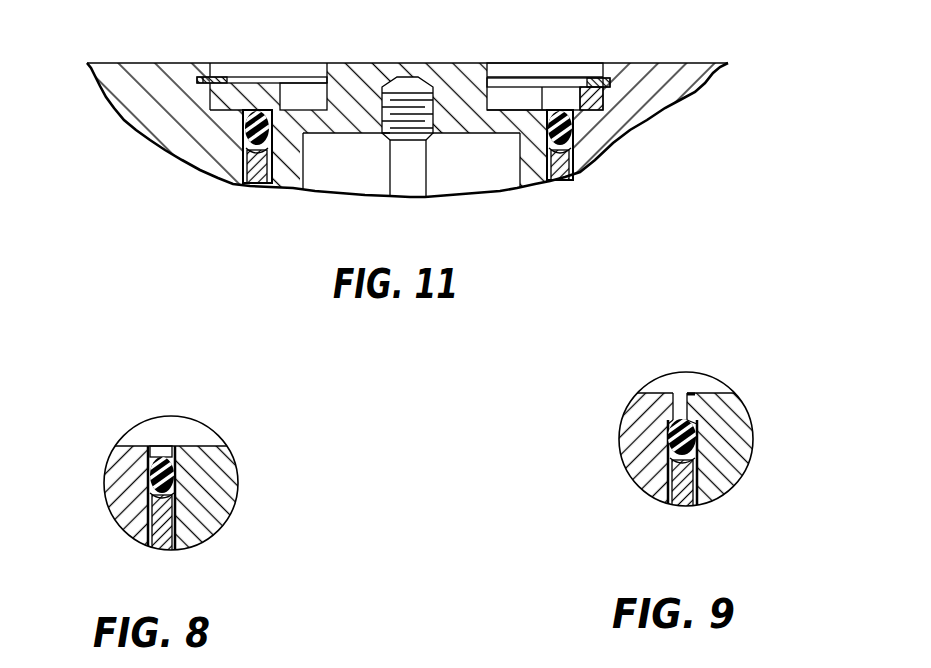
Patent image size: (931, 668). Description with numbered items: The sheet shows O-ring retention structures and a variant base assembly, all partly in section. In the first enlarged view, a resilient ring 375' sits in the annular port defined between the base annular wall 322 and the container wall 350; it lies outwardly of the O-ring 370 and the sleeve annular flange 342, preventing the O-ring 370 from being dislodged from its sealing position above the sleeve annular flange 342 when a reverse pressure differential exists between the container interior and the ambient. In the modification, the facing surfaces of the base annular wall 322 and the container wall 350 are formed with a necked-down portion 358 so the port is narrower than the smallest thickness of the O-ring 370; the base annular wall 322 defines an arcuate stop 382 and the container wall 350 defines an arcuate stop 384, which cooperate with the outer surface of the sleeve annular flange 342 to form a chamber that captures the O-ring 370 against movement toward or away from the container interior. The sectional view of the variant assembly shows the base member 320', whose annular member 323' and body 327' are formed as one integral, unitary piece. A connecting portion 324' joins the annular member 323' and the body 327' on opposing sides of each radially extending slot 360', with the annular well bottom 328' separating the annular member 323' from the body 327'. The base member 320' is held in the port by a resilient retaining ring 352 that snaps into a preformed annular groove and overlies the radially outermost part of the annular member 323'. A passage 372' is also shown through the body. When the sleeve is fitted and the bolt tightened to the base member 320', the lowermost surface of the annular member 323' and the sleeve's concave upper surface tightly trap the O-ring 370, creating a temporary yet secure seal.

In FIG. 11, the base member 320' is at (407, 103).
In FIG. 9, the base annular wall 322 is at (655, 487).
In FIG. 11, the annular member 323' is at (183, 110).
In FIG. 11, the connecting portion 324' is at (302, 71).
In FIG. 11, the body 327' is at (409, 101).
In FIG. 11, the annular well bottom 328' is at (548, 72).
In FIG. 11, the sleeve annular flange 342 is at (253, 188).
In FIG. 9, the sleeve annular flange 342 is at (683, 510).
In FIG. 9, the container wall 350 is at (718, 482).
In FIG. 11, the resilient retaining ring 352 is at (224, 78).
In FIG. 9, the necked-down portion 358 is at (672, 409).
In FIG. 11, the radially extending slot 360' is at (262, 44).
In FIG. 11, the O-ring 370 is at (572, 143).
In FIG. 8, the O-ring 370 is at (149, 462).
In FIG. 9, the O-ring 370 is at (699, 440).
In FIG. 11, the passage 372' is at (441, 186).
In FIG. 8, the resilient ring 375' is at (186, 424).
In FIG. 9, the arcuate stop 382 is at (678, 417).
In FIG. 9, the arcuate stop 384 is at (694, 395).